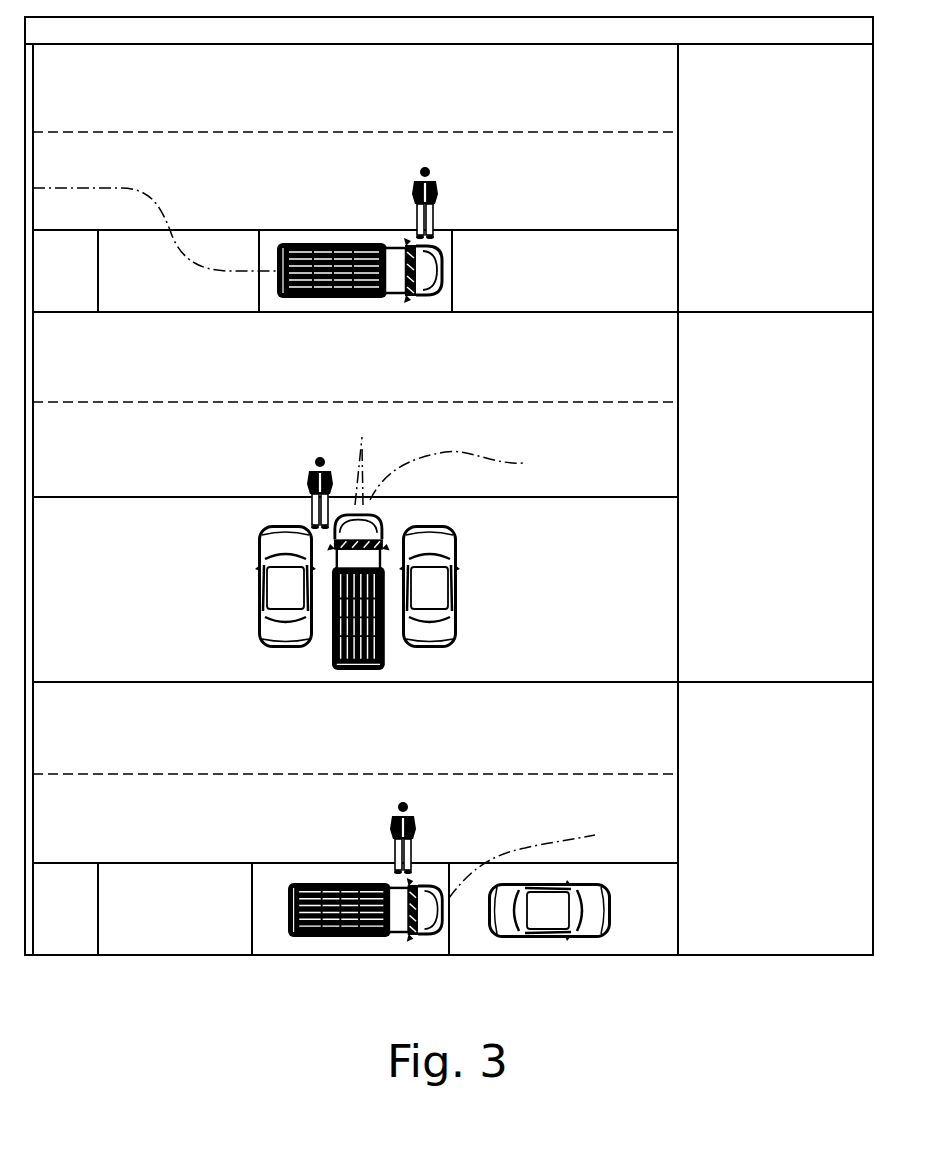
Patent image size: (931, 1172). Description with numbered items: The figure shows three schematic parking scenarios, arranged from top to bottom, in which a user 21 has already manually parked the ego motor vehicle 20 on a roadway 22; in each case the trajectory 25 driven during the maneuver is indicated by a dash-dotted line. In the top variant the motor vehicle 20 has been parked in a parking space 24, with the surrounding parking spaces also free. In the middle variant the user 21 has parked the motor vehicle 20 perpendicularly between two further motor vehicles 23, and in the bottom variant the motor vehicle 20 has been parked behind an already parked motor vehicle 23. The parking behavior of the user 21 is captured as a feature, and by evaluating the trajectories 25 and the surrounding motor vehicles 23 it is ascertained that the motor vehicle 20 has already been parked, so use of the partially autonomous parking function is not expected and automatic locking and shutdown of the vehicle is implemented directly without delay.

The ego motor vehicle 20 is at (335, 243).
The user 21 is at (433, 180).
The roadway 22 is at (568, 104).
The motor vehicle 23 is at (430, 525).
The parking space 24 is at (440, 302).
The trajectory 25 is at (157, 200).